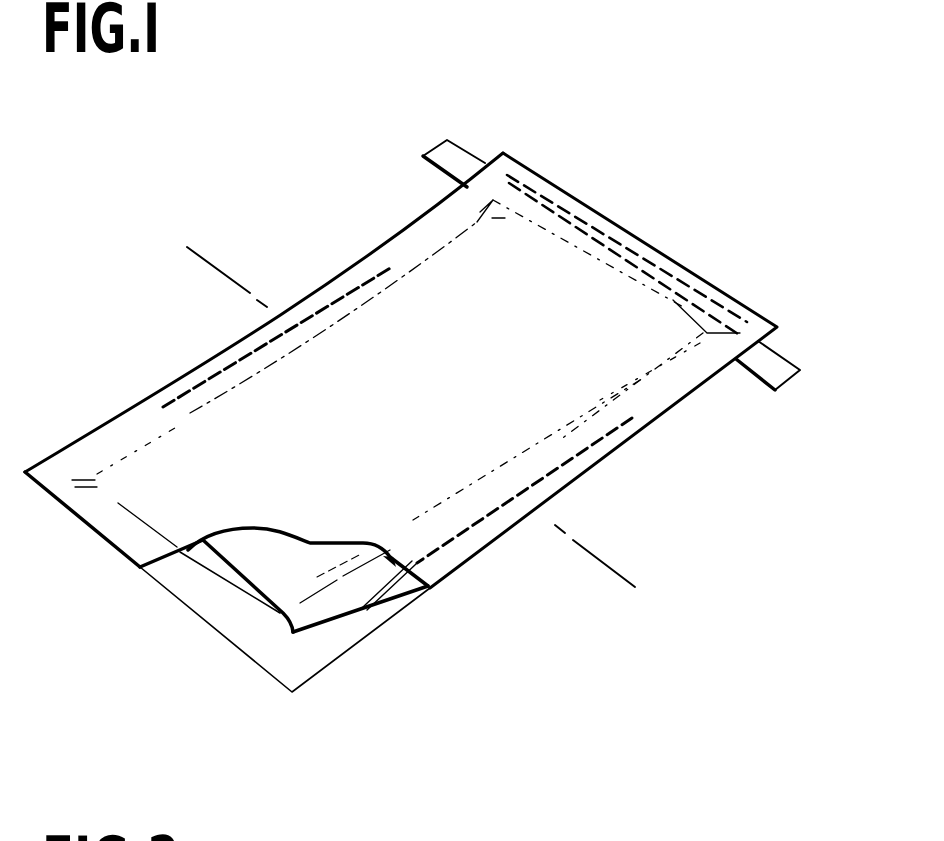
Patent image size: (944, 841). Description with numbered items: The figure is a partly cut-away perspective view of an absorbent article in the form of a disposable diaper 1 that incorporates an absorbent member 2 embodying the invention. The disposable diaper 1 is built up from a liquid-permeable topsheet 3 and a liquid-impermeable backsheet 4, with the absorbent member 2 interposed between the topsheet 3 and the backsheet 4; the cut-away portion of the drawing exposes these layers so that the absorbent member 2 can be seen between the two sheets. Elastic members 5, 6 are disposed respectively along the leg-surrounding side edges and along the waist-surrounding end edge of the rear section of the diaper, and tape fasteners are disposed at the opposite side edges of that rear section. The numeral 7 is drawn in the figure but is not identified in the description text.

The disposable diaper 1 is at (587, 90).
The absorbent member 2 is at (277, 577).
The liquid-permeable topsheet 3 is at (170, 507).
The liquid-impermeable backsheet 4 is at (330, 643).
The elastic member 5 is at (335, 306).
The elastic member 6 is at (628, 248).
The terminal lead tab 7 is at (783, 373).